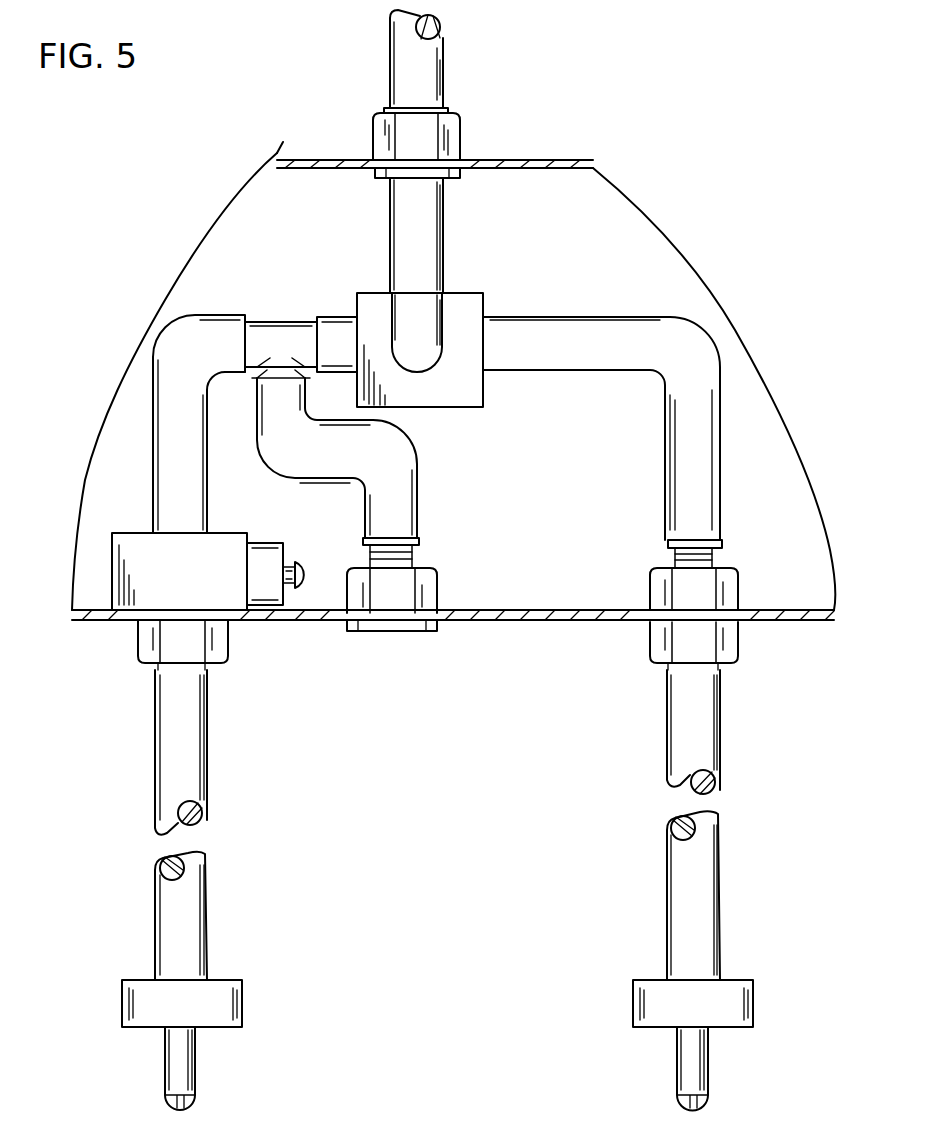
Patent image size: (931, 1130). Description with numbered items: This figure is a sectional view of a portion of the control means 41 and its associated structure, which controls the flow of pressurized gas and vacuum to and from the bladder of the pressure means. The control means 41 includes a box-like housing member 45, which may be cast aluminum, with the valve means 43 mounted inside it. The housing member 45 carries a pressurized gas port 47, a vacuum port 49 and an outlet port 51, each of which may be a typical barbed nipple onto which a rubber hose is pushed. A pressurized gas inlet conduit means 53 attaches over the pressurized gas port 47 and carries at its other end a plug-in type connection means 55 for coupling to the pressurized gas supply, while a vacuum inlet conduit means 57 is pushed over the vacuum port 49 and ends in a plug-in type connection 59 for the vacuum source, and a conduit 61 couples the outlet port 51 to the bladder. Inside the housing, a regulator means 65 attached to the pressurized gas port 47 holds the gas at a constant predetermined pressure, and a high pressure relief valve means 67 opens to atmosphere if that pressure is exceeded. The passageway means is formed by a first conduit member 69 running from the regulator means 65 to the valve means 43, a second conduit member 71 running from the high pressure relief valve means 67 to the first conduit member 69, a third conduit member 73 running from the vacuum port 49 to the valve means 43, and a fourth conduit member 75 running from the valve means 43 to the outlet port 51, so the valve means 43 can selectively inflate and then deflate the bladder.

The control means 41 is at (280, 103).
The valve means 43 is at (465, 304).
The housing member 45 is at (568, 165).
The pressurized gas port 47 is at (222, 650).
The vacuum port 49 is at (658, 648).
The outlet port 51 is at (446, 136).
The pressurized gas inlet conduit means 53 is at (188, 770).
The plug-in type connection means 55 is at (188, 1074).
The vacuum inlet conduit means 57 is at (672, 762).
The right supply tube lower section with collar 59 is at (688, 1071).
The conduit 61 is at (450, 49).
The regulator means 65 is at (213, 550).
The high pressure relief valve means 67 is at (425, 598).
The first conduit member 69 is at (168, 452).
The second conduit member 71 is at (403, 472).
The third conduit member 73 is at (620, 352).
The fourth conduit member 75 is at (403, 235).